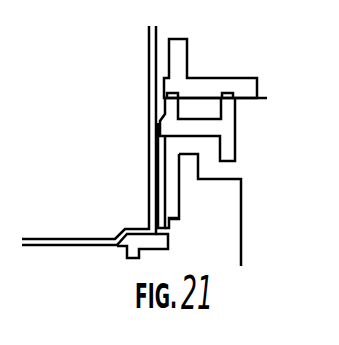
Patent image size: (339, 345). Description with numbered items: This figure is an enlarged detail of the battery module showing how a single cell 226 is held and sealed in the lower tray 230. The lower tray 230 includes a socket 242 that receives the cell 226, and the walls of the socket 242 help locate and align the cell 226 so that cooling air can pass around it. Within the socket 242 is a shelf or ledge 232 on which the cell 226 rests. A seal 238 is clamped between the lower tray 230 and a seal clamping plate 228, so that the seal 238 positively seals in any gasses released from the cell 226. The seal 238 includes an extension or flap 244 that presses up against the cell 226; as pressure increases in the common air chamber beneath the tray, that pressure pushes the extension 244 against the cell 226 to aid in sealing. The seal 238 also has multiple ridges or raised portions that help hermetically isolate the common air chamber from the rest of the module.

The cell 226 is at (67, 227).
The seal clamping plate 228 is at (242, 87).
The seal 238 is at (223, 133).
The lower tray 230 is at (205, 172).
The extension 244 is at (163, 160).
The socket 242 is at (165, 216).
The ledge 232 is at (162, 238).